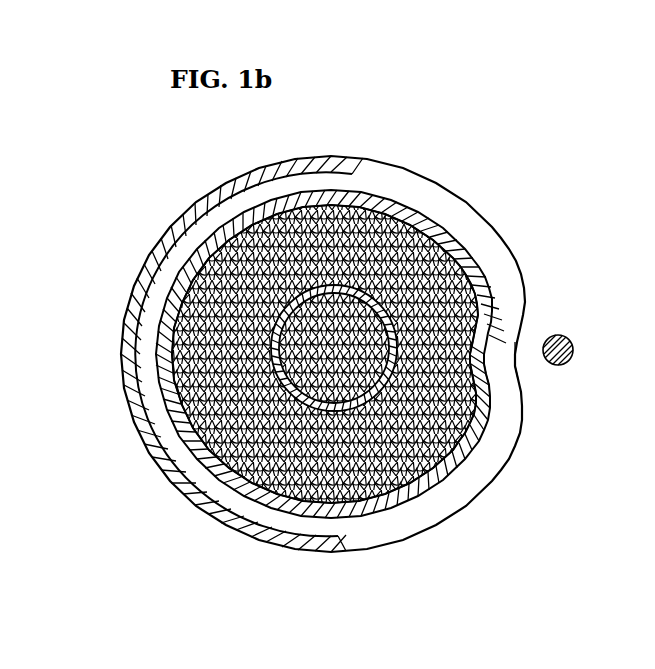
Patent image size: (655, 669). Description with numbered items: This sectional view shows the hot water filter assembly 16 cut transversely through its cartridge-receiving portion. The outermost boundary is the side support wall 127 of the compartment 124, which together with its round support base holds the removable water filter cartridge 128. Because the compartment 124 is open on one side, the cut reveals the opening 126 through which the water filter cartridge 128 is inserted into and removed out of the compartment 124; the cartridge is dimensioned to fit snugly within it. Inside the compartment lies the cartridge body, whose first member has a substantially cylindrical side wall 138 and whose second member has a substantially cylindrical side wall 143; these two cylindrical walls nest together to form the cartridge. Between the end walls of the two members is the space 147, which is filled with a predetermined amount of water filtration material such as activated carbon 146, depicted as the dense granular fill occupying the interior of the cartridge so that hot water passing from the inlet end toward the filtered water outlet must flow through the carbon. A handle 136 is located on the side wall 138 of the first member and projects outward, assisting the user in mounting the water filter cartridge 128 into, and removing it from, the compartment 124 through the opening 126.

The hot water filter assembly 16 is at (485, 162).
The side support wall 127 is at (312, 160).
The water filter cartridge 128 is at (404, 188).
The substantially cylindrical side wall 138 is at (452, 235).
The compartment 124 is at (520, 297).
The opening 126 is at (498, 337).
The handle 136 is at (563, 366).
The space 147 is at (257, 490).
The activated carbon 146 is at (303, 507).
The substantially cylindrical side wall 143 is at (377, 470).